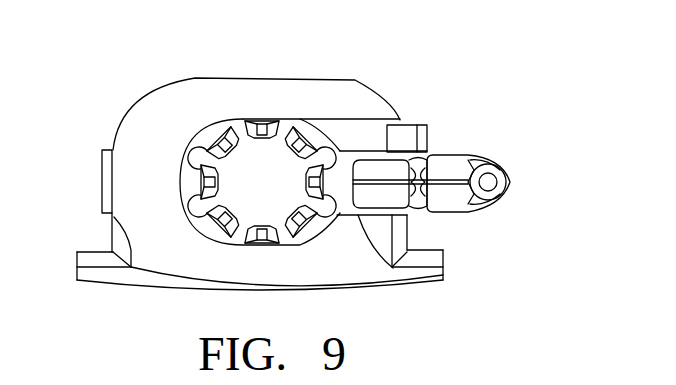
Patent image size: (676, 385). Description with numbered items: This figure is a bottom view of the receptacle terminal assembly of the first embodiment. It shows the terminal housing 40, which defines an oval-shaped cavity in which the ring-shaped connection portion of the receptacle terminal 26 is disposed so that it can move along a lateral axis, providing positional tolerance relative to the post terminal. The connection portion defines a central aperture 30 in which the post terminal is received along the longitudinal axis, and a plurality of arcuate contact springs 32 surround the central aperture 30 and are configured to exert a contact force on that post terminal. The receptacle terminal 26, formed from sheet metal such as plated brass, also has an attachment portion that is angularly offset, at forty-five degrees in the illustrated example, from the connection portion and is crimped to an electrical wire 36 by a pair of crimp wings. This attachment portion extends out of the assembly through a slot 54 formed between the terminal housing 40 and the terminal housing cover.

The terminal housing 40 is at (190, 92).
The central aperture 30 is at (316, 150).
The arcuate contact spring 32 is at (203, 182).
The receptacle terminal 26 is at (413, 145).
The electrical wire 36 is at (510, 189).
The slot 54 is at (393, 268).